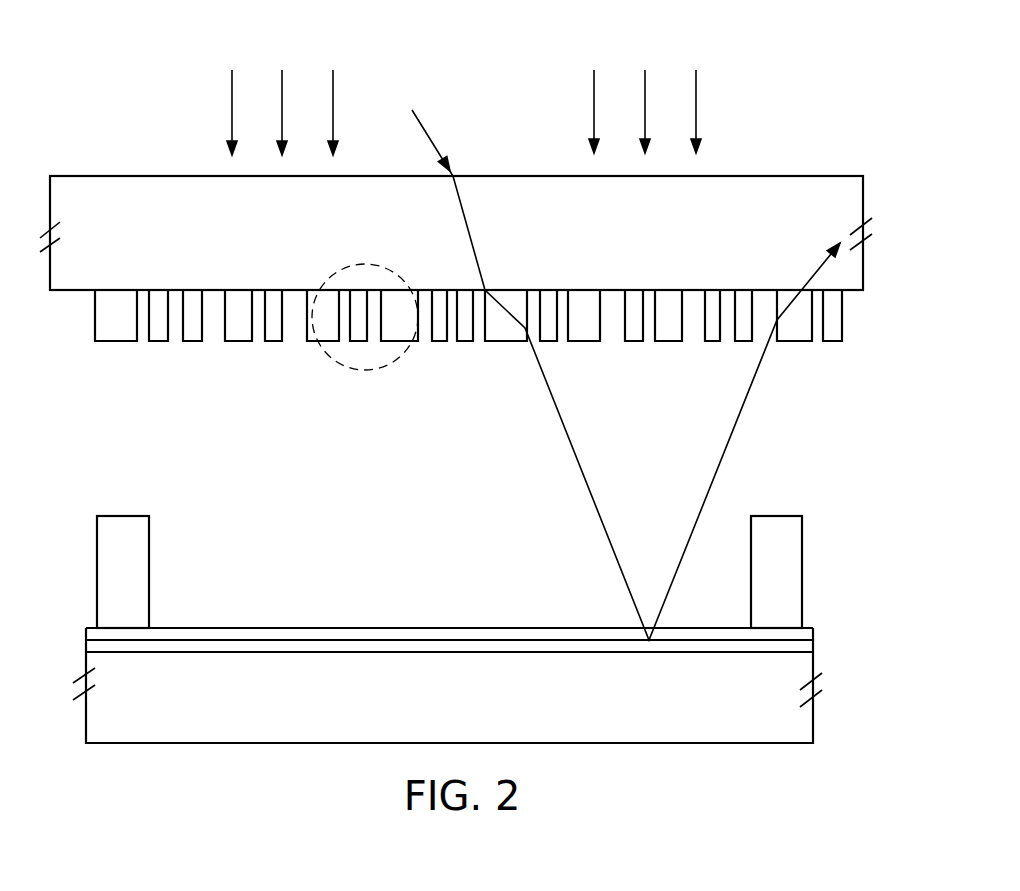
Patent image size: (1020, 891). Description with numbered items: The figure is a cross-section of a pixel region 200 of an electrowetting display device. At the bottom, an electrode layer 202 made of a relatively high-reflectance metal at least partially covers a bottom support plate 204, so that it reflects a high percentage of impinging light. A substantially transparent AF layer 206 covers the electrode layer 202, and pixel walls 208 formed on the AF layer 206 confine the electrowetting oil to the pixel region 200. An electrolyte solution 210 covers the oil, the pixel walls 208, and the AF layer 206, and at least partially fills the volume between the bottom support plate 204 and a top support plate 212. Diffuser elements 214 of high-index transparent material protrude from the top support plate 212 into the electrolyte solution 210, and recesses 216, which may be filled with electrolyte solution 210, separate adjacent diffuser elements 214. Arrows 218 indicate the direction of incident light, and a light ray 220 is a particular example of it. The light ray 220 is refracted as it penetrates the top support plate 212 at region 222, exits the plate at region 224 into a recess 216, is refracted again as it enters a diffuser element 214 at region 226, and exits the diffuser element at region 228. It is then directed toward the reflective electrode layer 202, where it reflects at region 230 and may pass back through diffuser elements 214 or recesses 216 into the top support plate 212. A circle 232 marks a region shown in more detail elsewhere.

The pixel region 200 is at (765, 70).
The electrode layer 202 is at (815, 648).
The bottom support plate 204 is at (447, 685).
The AF layer 206 is at (312, 630).
The pixel walls 208 is at (449, 572).
The electrolyte solution 210 is at (444, 530).
The top support plate 212 is at (456, 233).
The diffuser elements 214 is at (237, 342).
The recesses 216 is at (295, 342).
The arrows 218 is at (464, 112).
The light ray 220 is at (438, 150).
The region 222 is at (448, 188).
The region 224 is at (486, 277).
The region 226 is at (493, 318).
The region 228 is at (522, 340).
The region 230 is at (648, 660).
The circle 232 is at (370, 372).